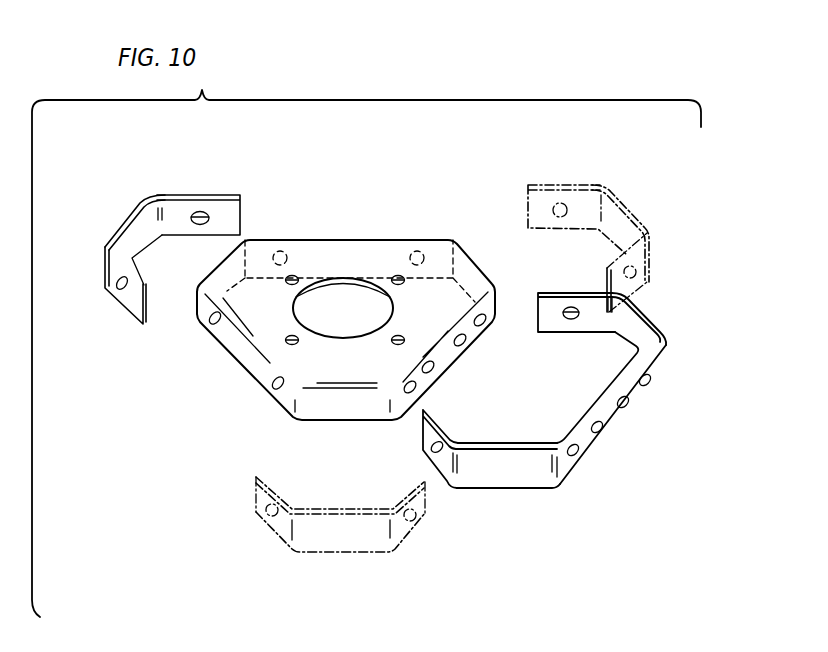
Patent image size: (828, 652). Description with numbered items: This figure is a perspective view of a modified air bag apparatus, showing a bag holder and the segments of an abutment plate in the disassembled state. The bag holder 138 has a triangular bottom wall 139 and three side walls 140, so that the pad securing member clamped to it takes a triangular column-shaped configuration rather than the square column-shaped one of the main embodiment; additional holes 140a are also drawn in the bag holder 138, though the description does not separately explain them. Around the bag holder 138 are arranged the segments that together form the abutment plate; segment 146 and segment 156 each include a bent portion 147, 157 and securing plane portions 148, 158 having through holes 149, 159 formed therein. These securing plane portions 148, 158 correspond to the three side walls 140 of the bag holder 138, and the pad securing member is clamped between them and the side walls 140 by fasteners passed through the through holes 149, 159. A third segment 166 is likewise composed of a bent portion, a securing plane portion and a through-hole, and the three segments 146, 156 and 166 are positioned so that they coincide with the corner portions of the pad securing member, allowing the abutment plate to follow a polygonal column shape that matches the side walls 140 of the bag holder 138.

The bag holder 138 is at (347, 236).
The triangular bottom wall 139 is at (210, 337).
The side walls 140 is at (390, 248).
The mounting holes 140a is at (277, 252).
The segment 146 is at (168, 248).
The bent portion 147 is at (147, 222).
The securing plane portion 148 is at (228, 208).
The through hole 149 is at (197, 225).
The segment 156 is at (525, 395).
The bent portion 157 is at (648, 312).
The securing plane portion 158 is at (538, 295).
The through hole 159 is at (568, 323).
The segment 166 is at (609, 213).